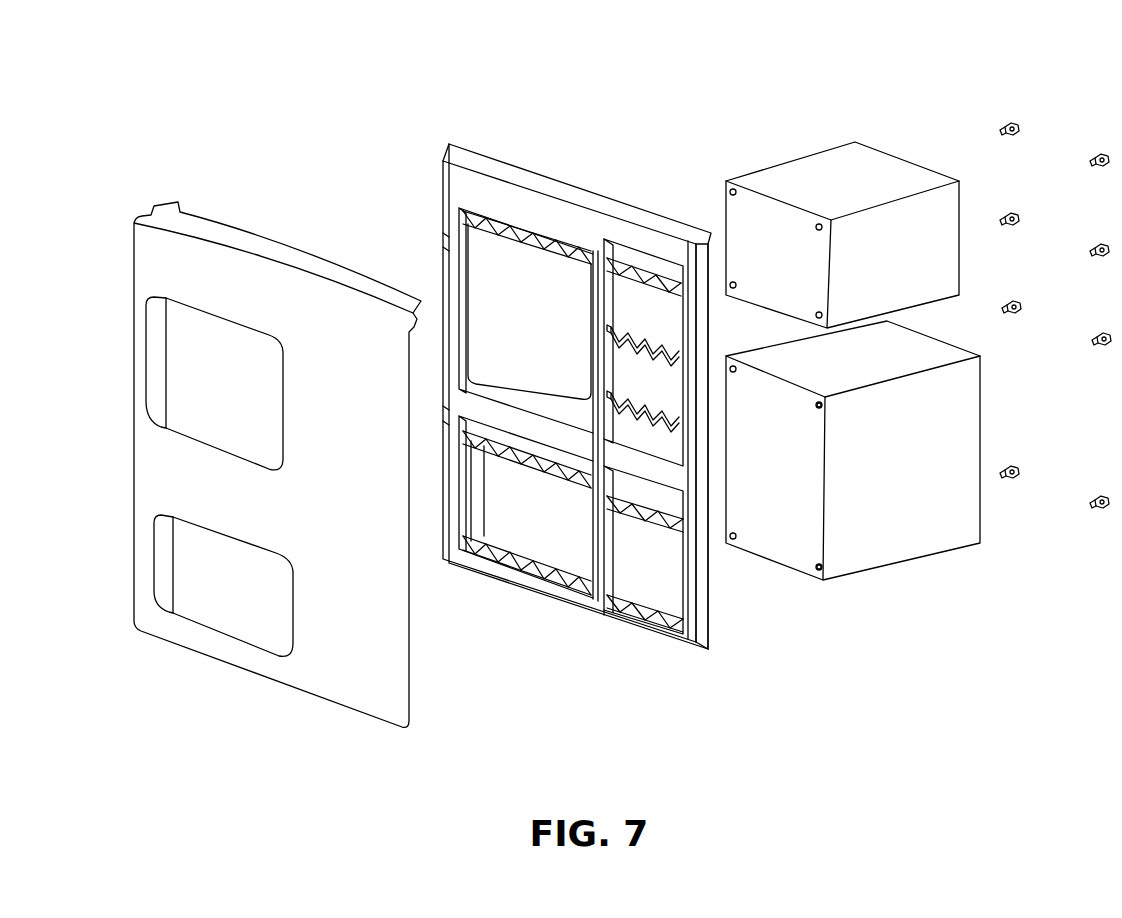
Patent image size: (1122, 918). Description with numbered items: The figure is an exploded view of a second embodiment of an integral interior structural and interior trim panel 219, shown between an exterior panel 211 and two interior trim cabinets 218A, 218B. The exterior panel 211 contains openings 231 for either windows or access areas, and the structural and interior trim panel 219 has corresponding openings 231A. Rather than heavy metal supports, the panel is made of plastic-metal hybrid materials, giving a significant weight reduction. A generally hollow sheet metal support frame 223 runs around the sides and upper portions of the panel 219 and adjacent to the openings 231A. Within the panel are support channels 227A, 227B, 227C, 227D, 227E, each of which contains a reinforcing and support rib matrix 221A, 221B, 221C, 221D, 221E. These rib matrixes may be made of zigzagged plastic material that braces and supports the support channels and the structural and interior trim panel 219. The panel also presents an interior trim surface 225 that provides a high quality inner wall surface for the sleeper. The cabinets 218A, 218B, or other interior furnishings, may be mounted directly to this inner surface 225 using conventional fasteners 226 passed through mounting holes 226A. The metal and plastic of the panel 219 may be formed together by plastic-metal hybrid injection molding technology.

The exterior panel 211 is at (288, 249).
The openings 231 is at (190, 298).
The corresponding openings 231A is at (446, 240).
The structural and interior trim panel 219 is at (538, 170).
The support channel 227A is at (508, 222).
The support channel 227B is at (441, 413).
The support channel 227C is at (522, 577).
The support channel 227D is at (680, 262).
The support channel 227E is at (623, 620).
The reinforcing and support rib matrix 221A is at (470, 200).
The reinforcing and support rib matrix 221B is at (483, 575).
The reinforcing and support rib matrix 221C is at (550, 600).
The reinforcing and support rib matrix 221D is at (628, 300).
The reinforcing and support rib matrix 221E is at (655, 615).
The interior trim surface 225 is at (646, 332).
The sheet metal support frame 223 is at (697, 583).
The interior trim cabinet 218A is at (813, 152).
The interior trim cabinet 218B is at (886, 572).
The fasteners 226 is at (1101, 148).
The mounting holes 226A is at (818, 404).